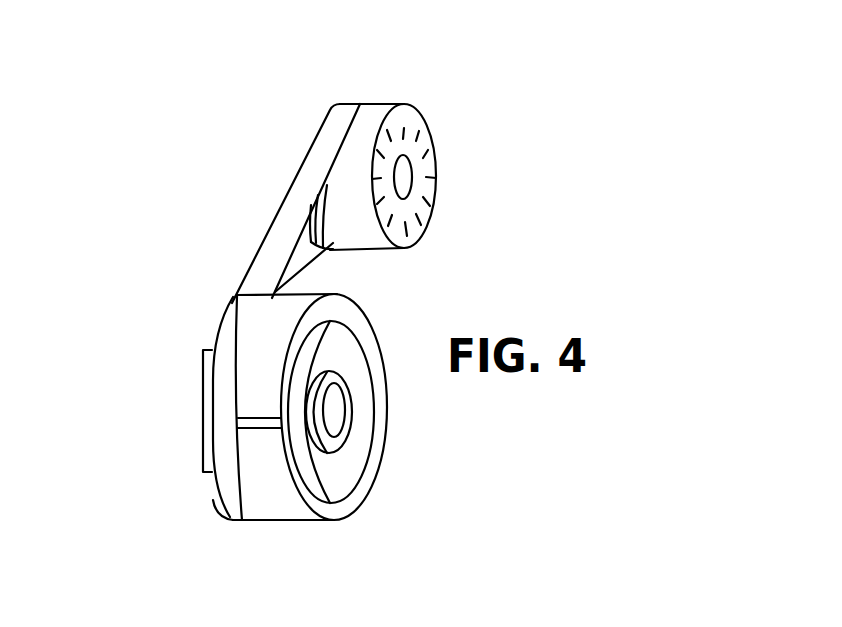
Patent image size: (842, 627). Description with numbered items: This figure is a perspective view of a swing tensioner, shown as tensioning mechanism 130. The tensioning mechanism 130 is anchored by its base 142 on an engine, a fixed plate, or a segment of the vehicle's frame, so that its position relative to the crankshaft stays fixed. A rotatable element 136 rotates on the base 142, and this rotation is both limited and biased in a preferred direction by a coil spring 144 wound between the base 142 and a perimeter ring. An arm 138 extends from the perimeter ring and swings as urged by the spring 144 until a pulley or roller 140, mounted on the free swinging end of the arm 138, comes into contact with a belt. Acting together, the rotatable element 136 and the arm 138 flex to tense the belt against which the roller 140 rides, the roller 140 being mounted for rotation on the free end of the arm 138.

The tensioning mechanism 130 is at (438, 307).
The rotatable element 136 is at (385, 428).
The arm 138 is at (282, 218).
The roller 140 is at (412, 117).
The base 142 is at (193, 388).
The coil spring 144 is at (373, 475).